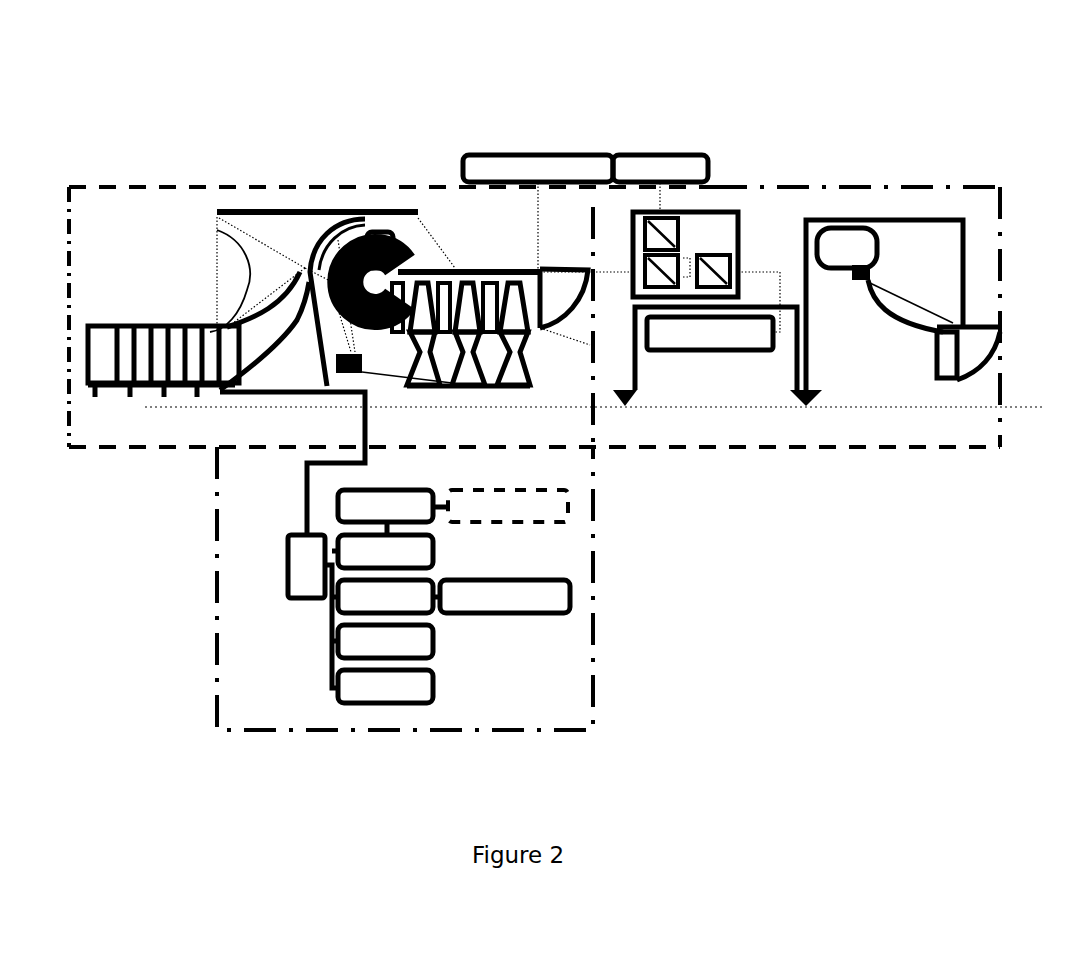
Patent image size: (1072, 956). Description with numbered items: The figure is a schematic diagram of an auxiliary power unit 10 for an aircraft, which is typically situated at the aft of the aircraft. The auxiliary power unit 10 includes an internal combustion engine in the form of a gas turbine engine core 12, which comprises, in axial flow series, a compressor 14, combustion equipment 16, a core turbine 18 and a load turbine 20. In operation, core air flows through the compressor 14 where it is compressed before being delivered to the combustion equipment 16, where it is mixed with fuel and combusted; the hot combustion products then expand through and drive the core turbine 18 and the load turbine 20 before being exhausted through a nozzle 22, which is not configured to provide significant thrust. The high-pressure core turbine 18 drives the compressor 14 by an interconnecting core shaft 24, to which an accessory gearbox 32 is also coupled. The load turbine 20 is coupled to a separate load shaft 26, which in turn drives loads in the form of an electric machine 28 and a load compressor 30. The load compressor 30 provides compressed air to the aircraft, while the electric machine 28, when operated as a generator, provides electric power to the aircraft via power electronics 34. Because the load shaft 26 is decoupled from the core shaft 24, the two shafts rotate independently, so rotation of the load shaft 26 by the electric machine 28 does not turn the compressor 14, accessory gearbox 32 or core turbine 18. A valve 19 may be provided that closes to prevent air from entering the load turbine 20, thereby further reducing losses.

The auxiliary power unit 10 is at (447, 114).
The gas turbine engine core 12 is at (270, 158).
The compressor 14 is at (217, 230).
The combustion equipment 16 is at (343, 227).
The core turbine 18 is at (437, 278).
The valve 19 is at (452, 383).
The load turbine 20 is at (527, 342).
The nozzle 22 is at (563, 240).
The core shaft 24 is at (265, 392).
The load shaft 26 is at (530, 386).
The electric machine 28 is at (753, 393).
The load compressor 30 is at (938, 257).
The accessory gearbox 32 is at (618, 580).
The power electronics 34 is at (751, 181).